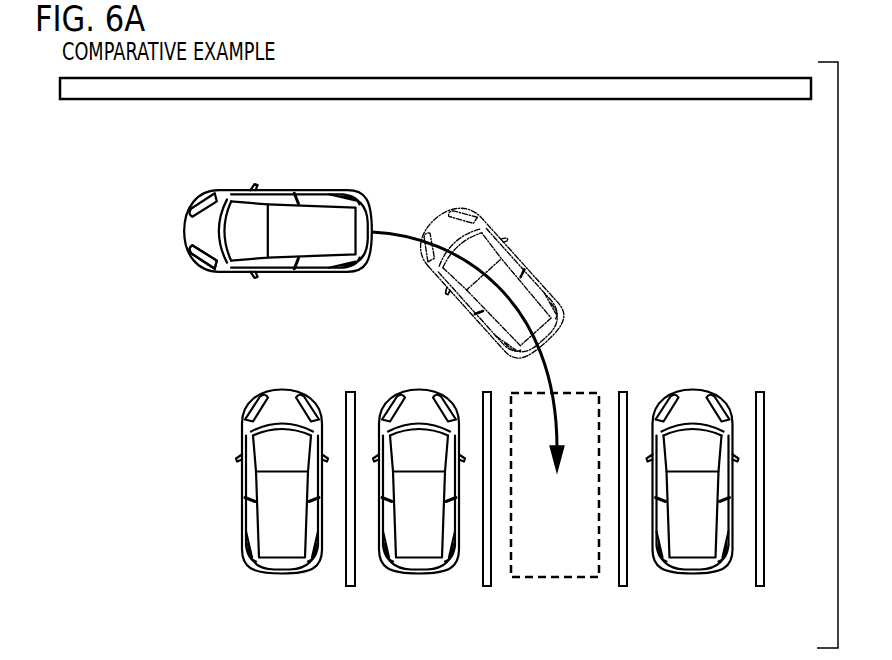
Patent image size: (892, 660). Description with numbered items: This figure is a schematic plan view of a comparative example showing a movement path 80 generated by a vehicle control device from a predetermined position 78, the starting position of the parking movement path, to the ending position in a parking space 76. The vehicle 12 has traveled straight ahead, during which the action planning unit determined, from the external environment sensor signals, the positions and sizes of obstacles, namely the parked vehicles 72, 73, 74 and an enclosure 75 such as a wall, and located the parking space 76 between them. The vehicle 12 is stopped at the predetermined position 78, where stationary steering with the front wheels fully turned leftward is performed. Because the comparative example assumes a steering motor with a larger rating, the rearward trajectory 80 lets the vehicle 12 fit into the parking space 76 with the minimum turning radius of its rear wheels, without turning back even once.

The vehicle 12 is at (280, 193).
The vehicle 72 is at (688, 577).
The vehicle 73 is at (417, 576).
The vehicle 74 is at (280, 575).
The enclosure 75 is at (627, 77).
The parking space 76 is at (555, 553).
The predetermined position 78 is at (230, 279).
The movement path 80 is at (463, 303).